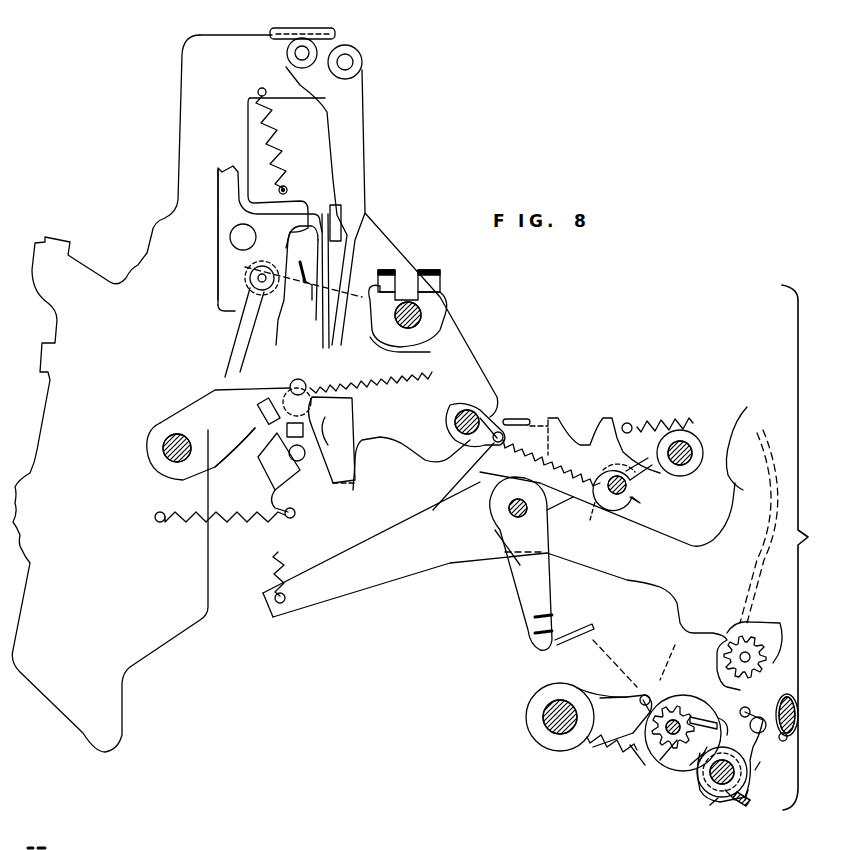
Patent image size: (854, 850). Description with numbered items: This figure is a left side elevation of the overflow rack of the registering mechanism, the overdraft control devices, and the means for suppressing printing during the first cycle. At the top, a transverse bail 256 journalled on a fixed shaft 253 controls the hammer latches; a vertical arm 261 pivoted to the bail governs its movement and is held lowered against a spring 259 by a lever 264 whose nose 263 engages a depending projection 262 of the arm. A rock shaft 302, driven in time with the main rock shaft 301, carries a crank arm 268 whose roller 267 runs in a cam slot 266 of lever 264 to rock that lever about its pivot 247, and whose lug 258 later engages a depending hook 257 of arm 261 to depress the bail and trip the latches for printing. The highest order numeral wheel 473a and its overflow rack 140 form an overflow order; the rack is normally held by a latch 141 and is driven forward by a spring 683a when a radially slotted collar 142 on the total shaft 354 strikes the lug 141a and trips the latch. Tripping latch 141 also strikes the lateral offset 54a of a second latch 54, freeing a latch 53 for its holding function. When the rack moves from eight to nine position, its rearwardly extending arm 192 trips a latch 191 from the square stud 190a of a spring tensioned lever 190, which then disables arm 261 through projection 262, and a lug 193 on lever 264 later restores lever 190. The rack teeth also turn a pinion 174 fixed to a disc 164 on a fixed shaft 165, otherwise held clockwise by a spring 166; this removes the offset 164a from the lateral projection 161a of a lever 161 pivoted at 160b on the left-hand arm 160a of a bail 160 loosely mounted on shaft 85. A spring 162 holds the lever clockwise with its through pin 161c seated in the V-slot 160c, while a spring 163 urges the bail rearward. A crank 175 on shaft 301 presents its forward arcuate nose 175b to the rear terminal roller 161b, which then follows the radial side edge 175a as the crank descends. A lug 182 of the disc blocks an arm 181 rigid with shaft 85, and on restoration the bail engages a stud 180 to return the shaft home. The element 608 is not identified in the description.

The transverse bail 256 is at (332, 32).
The fixed shaft 253 is at (362, 62).
The vertical arm 261 is at (355, 140).
The spring 259 is at (255, 135).
The lever 264 is at (220, 190).
The pivot 247 is at (238, 238).
The nose 263 is at (288, 236).
The roller 267 is at (255, 282).
The cam slot 266 is at (250, 312).
The lug 258 is at (312, 258).
The depending projection 262 is at (342, 258).
The rock shaft 302 is at (440, 325).
The crank arm 268 is at (400, 350).
The depending hook 257 is at (340, 390).
The spring tensioned lever 190 is at (245, 395).
The lug 193 is at (340, 400).
The latch 191 is at (352, 488).
The square stud 190a is at (278, 478).
The spring 683a is at (485, 470).
The rearwardly extending arm 192 is at (337, 595).
The second latch 54 is at (532, 597).
The lateral offset 54a is at (590, 508).
The pivot 608 is at (502, 533).
The latch 53 is at (590, 628).
The overflow latch 141 is at (595, 413).
The lug 141a is at (650, 412).
The total shaft 354 is at (632, 486).
The radially slotted collar 142 is at (633, 503).
The overflow rack 140 is at (748, 412).
The highest order numeral wheel 473a is at (752, 635).
The crank 175 is at (528, 728).
The main rock shaft 301 is at (545, 712).
The radial side edge 175a is at (607, 697).
The forward arcuate nose 175b is at (640, 698).
The spring 166 is at (640, 737).
The lug 182 is at (637, 750).
The lever 161 is at (672, 645).
The rear terminal roller 161b is at (603, 628).
The disc 164 is at (643, 700).
The offset 164a is at (700, 717).
The through pin 161c is at (722, 723).
The fixed shaft 165 is at (677, 740).
The pinion 174 is at (677, 740).
The arm 181 is at (707, 747).
The lateral projection 161a is at (700, 755).
The bail 160 is at (752, 796).
The left-hand arm 160a is at (748, 707).
The pivot 160b is at (760, 720).
The V-slot 160c is at (727, 790).
The shaft 85 is at (710, 805).
The stud 180 is at (745, 800).
The spring 162 is at (760, 745).
The spring 163 is at (755, 770).